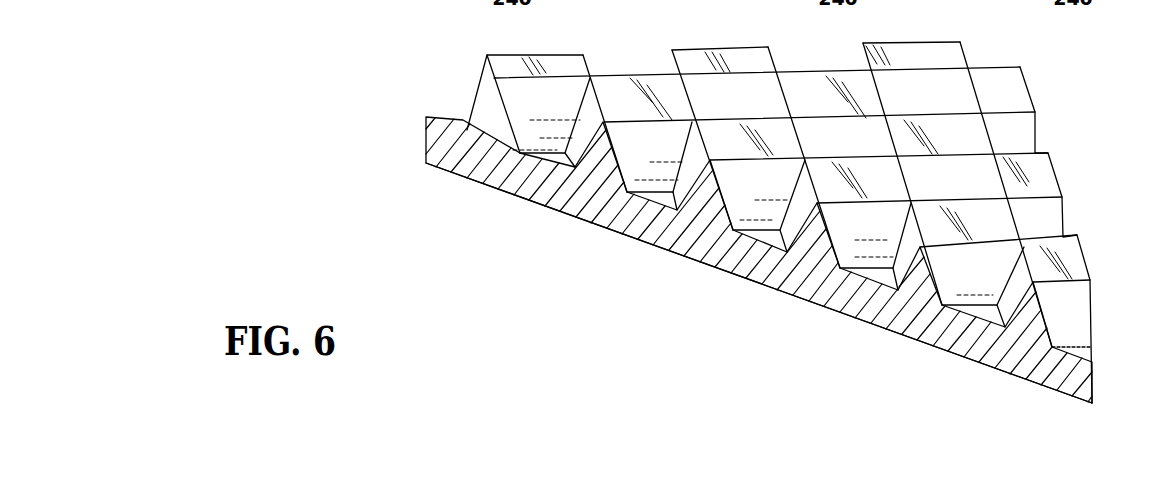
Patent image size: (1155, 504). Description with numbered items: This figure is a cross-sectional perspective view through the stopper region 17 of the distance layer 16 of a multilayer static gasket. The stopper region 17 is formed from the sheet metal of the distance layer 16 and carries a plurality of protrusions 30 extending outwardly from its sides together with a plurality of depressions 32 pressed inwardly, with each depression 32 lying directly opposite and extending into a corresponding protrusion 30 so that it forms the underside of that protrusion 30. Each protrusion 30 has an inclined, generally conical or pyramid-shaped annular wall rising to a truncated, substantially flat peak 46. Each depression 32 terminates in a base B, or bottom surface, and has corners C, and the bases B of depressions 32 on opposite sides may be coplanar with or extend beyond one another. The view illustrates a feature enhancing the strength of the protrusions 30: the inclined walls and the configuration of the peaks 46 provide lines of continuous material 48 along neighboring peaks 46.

The distance layer 16 is at (987, 67).
The stopper region 17 is at (452, 160).
The protrusions 30 is at (563, 62).
The depressions 32 is at (557, 140).
The peak 46 is at (728, 140).
The lines of continuous material 48 is at (697, 265).
The base B is at (1080, 350).
The corner C is at (602, 77).